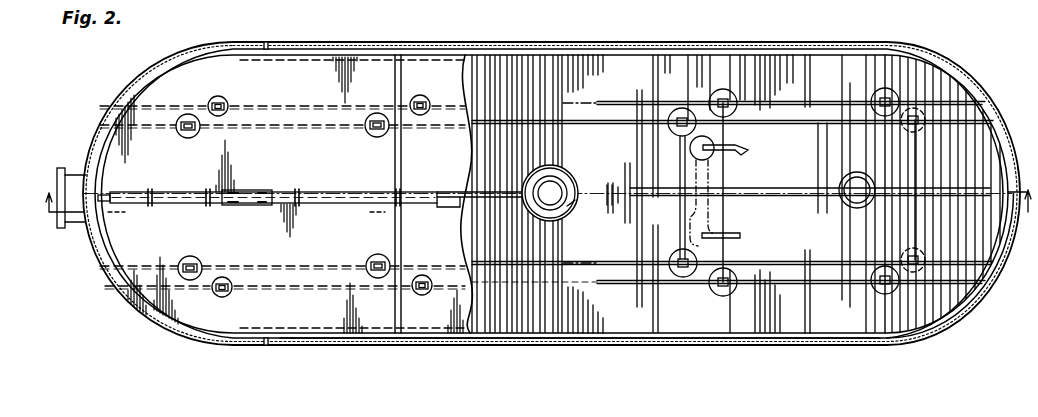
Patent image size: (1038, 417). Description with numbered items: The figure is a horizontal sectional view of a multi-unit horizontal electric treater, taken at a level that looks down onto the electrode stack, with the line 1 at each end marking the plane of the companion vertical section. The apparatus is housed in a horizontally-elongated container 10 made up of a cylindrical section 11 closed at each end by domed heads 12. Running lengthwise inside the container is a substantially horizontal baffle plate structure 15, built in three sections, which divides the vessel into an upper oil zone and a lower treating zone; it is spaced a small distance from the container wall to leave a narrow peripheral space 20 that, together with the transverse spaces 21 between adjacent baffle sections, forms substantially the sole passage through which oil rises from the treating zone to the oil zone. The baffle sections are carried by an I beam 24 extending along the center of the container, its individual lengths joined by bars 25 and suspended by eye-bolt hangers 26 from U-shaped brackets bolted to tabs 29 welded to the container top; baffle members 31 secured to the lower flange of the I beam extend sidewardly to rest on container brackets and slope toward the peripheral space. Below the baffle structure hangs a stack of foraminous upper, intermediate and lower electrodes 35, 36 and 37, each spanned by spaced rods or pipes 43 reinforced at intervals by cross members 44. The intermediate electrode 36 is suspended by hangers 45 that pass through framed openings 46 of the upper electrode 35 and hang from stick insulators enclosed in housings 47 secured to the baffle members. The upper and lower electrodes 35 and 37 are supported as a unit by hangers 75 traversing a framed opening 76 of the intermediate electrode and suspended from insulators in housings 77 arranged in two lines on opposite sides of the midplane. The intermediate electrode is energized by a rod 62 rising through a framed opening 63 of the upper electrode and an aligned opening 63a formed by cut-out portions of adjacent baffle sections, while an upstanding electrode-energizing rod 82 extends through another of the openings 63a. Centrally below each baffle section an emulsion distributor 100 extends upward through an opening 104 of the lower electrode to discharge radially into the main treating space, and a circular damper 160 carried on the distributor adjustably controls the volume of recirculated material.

The section line 1 is at (540, 200).
The container 10 is at (460, 340).
The cylindrical section 11 is at (552, 340).
The domed heads 12 is at (112, 118).
The baffle plate structure 15 is at (157, 90).
The peripheral space 20 is at (652, 342).
The transverse spaces 21 is at (409, 155).
The I beam 24 is at (321, 205).
The bars 25 is at (250, 206).
The hangers 26 is at (296, 190).
The tabs 29 is at (266, 49).
The baffle members 31 is at (312, 338).
The upper electrode 35 is at (992, 246).
The intermediate electrode 36 is at (802, 85).
The lower electrode 37 is at (582, 300).
The rods or pipes 43 is at (583, 72).
The cross members 44 is at (629, 101).
The hangers 45 is at (880, 96).
The framed openings 46 is at (910, 108).
The housings 47 is at (222, 97).
The rod 62 is at (731, 152).
The framed opening 63 is at (715, 145).
The opening 63a is at (713, 222).
The hangers 75 is at (925, 112).
The framed opening 76 is at (668, 125).
The housings 77 is at (186, 139).
The electrode-energizing rod 82 is at (750, 237).
The emulsion distributor 100 is at (564, 168).
The opening 104 is at (573, 204).
The damper 160 is at (574, 180).